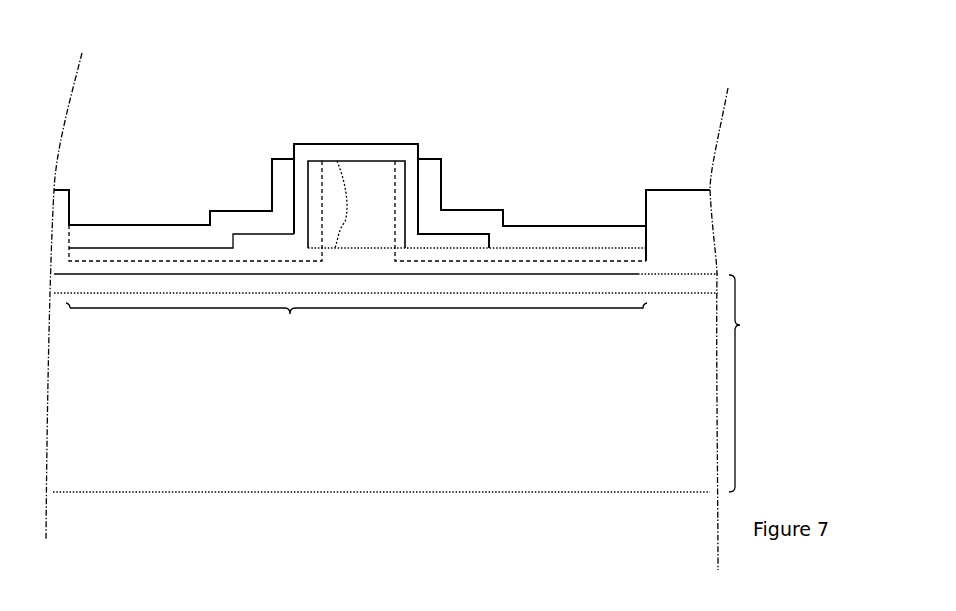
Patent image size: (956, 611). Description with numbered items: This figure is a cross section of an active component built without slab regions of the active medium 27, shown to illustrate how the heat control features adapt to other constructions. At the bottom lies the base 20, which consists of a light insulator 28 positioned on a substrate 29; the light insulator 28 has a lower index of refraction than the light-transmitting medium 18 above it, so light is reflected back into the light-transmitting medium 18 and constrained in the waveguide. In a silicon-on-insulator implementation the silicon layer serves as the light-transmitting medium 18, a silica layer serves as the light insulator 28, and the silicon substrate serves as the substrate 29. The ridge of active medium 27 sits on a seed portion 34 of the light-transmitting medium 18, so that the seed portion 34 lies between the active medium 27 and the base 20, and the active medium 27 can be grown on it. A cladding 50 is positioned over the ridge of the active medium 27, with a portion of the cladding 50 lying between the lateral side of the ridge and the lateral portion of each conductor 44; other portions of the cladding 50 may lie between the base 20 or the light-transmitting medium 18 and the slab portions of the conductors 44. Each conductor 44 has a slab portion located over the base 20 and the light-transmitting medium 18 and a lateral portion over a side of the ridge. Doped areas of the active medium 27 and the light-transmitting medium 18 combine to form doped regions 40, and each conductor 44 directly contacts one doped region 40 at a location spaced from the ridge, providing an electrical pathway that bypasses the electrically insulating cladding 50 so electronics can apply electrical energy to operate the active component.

The light-transmitting medium 18 is at (155, 275).
The base 20 is at (412, 383).
The active medium 27 is at (348, 222).
The light insulator 28 is at (680, 287).
The substrate 29 is at (157, 473).
The seed portion 34 is at (356, 321).
The doped regions 40 is at (317, 210).
The conductors 44 is at (177, 233).
The cladding 50 is at (470, 197).